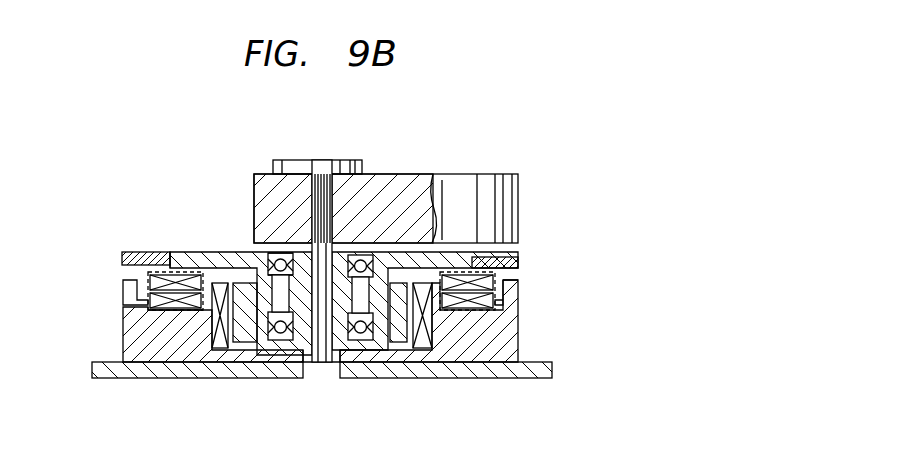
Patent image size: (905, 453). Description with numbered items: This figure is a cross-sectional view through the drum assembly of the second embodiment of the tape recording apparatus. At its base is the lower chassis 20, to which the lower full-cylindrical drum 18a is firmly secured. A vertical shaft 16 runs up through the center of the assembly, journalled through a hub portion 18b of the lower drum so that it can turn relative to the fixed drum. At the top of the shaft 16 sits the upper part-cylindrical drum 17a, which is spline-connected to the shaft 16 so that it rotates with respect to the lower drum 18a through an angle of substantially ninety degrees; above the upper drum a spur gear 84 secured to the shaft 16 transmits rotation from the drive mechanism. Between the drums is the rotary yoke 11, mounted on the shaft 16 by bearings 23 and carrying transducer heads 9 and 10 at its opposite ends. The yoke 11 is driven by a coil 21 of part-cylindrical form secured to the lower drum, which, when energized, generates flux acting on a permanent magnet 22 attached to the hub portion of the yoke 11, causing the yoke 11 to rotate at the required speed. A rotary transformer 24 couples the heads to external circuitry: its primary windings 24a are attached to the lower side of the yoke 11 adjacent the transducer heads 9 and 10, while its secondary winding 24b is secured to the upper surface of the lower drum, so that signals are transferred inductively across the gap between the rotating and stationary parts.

The transducer head 9 is at (140, 252).
The transducer head 10 is at (520, 256).
The rotary yoke 11 is at (195, 252).
The shaft 16 is at (318, 174).
The upper part-cylindrical drum 17a is at (466, 185).
The lower full-cylindrical drum 18a is at (518, 322).
The hub portion 18b is at (303, 352).
The lower chassis 20 is at (540, 372).
The coil 21 is at (192, 362).
The permanent magnet 22 is at (245, 340).
The bearings 23 is at (365, 253).
The rotary transformer 24 is at (178, 272).
The primary windings 24a is at (137, 286).
The secondary winding 24b is at (150, 306).
The spur gear 84 is at (288, 163).